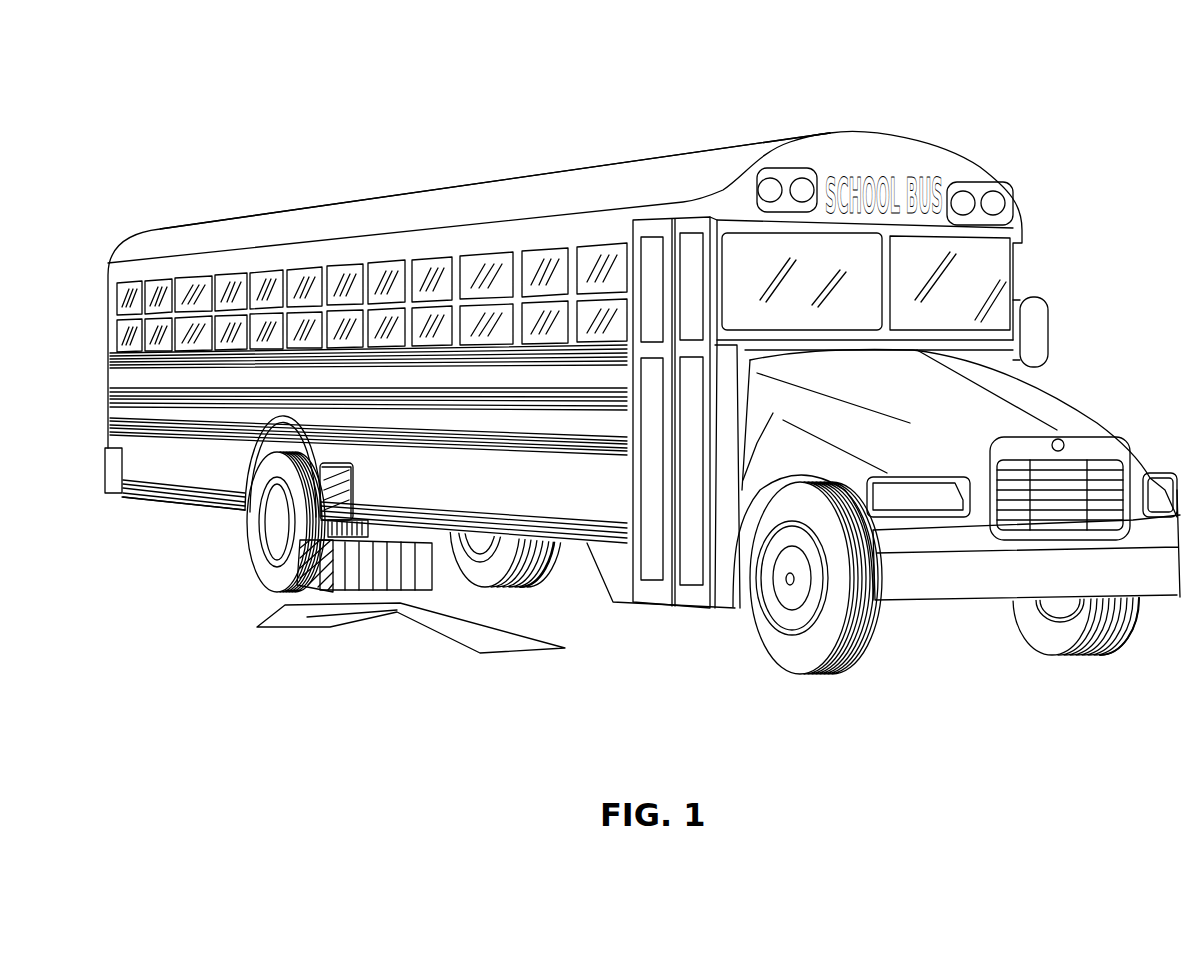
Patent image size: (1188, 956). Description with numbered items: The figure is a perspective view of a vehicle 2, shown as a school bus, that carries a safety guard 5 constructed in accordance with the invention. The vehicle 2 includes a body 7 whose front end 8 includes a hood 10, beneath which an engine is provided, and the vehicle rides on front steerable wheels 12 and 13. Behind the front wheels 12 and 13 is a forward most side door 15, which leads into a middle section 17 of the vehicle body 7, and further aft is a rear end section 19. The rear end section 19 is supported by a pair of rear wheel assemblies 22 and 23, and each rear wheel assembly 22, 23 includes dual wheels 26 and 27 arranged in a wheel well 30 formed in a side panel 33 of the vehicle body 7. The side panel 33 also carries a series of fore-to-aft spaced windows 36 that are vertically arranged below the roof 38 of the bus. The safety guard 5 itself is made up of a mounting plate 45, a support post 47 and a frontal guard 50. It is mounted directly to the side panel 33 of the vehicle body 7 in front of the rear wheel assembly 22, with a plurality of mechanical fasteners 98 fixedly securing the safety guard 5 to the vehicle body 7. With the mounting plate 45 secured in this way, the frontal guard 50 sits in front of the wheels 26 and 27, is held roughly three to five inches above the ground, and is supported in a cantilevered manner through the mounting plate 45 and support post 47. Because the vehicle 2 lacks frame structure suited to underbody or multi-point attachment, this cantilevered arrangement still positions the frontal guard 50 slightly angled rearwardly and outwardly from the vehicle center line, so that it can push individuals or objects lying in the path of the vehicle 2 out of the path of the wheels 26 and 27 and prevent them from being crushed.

The vehicle 2 is at (1031, 113).
The safety guard 5 is at (389, 603).
The body 7 is at (186, 480).
The front end 8 is at (1108, 349).
The hood 10 is at (1105, 401).
The front steerable wheel 12 is at (820, 678).
The front steerable wheel 13 is at (1087, 658).
The forward most side door 15 is at (652, 556).
The middle section 17 is at (447, 467).
The rear end section 19 is at (213, 413).
The rear wheel assembly 22 is at (229, 583).
The rear wheel assembly 23 is at (515, 603).
The dual wheel 26 is at (252, 523).
The dual wheel 27 is at (373, 530).
The wheel well 30 is at (268, 440).
The side panel 33 is at (527, 491).
The windows 36 is at (345, 272).
The roof 38 is at (548, 168).
The mounting plate 45 is at (356, 487).
The support post 47 is at (370, 527).
The frontal guard 50 is at (372, 588).
The mechanical fasteners 98 is at (322, 464).